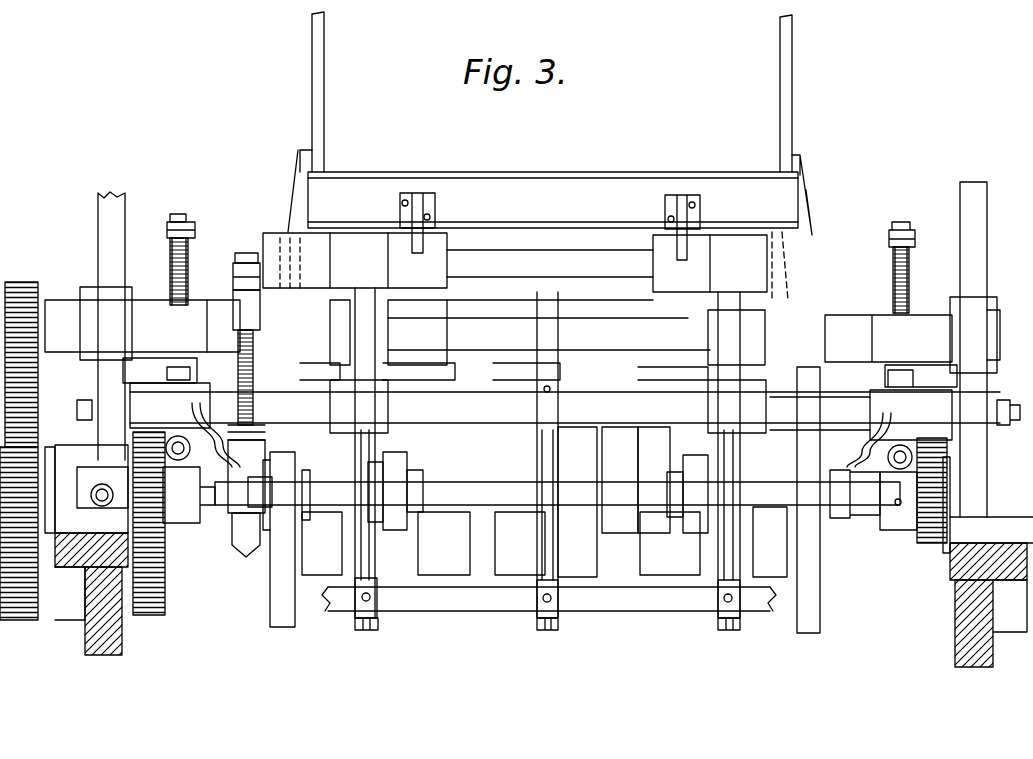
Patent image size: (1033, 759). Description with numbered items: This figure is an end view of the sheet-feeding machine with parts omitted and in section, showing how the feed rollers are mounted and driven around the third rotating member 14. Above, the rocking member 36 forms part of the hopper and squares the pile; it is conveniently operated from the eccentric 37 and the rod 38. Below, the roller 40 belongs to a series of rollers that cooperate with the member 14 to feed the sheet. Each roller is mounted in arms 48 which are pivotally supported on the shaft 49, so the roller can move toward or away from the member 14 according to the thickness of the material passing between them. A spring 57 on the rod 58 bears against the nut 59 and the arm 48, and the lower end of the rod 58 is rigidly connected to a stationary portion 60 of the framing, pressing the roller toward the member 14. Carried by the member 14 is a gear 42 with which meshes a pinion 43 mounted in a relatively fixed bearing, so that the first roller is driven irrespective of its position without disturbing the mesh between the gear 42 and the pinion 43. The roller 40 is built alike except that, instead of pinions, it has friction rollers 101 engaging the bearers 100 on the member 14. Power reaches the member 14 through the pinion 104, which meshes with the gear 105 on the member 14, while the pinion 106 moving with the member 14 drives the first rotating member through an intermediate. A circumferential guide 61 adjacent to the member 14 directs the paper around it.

The third rotating member 14 is at (544, 502).
The rocking member 36 is at (539, 230).
The eccentric 37 is at (262, 452).
The rod 38 is at (240, 340).
The roller 40 is at (415, 534).
The gear 42 is at (26, 622).
The pinion 43 is at (36, 288).
The arms 48 is at (149, 300).
The shaft 49 is at (513, 328).
The spring 57 is at (186, 256).
The rod 58 is at (186, 273).
The nut 59 is at (192, 226).
The stationary portion of the framing 60 is at (200, 373).
The circumferential guide 61 is at (558, 549).
The bearers 100 is at (285, 585).
The friction rollers 101 is at (283, 522).
The pinion 104 is at (185, 522).
The gear 105 is at (167, 568).
The pinion 106 is at (922, 543).